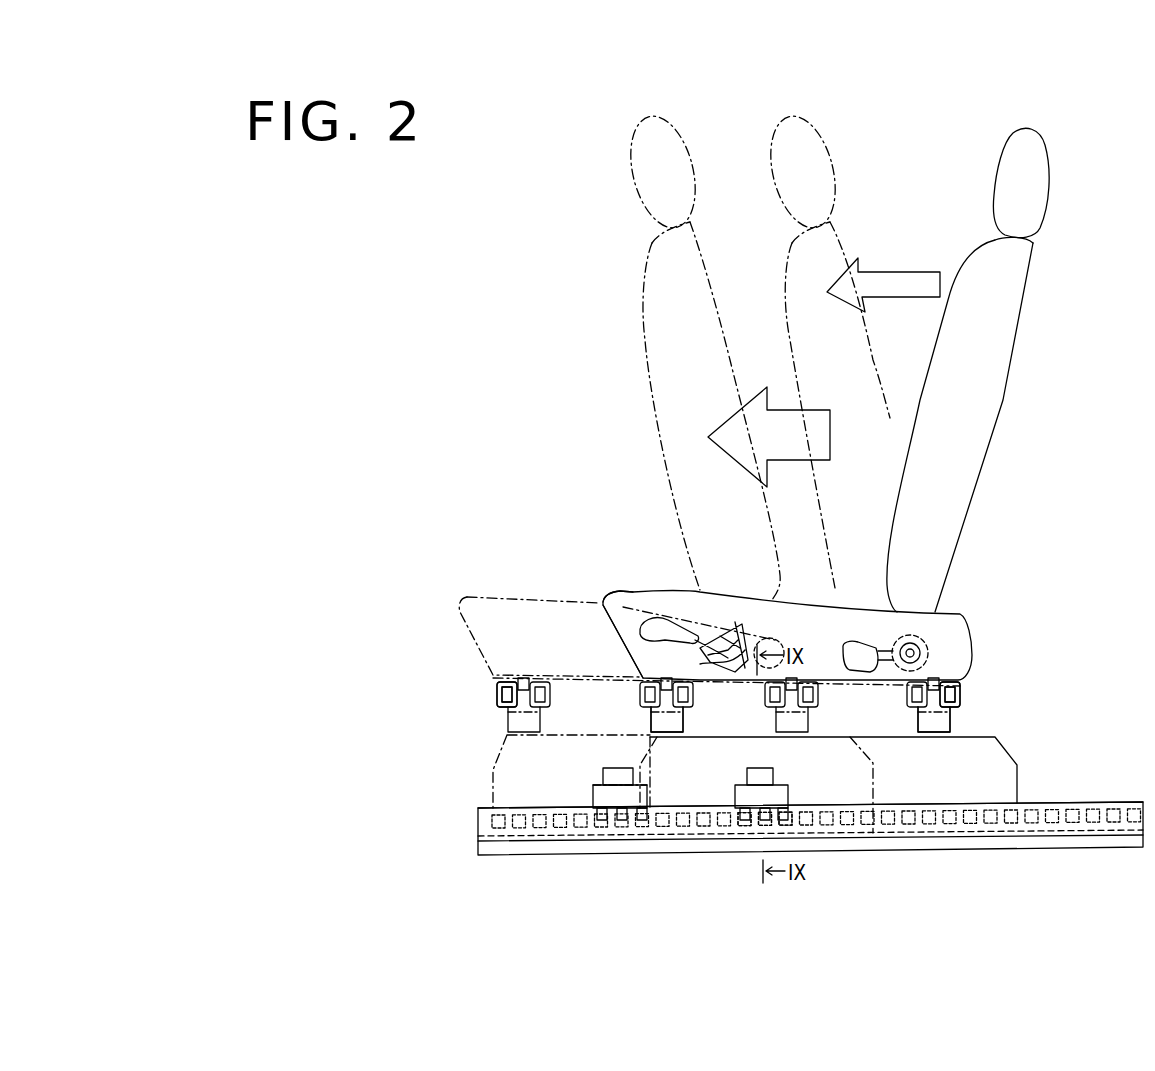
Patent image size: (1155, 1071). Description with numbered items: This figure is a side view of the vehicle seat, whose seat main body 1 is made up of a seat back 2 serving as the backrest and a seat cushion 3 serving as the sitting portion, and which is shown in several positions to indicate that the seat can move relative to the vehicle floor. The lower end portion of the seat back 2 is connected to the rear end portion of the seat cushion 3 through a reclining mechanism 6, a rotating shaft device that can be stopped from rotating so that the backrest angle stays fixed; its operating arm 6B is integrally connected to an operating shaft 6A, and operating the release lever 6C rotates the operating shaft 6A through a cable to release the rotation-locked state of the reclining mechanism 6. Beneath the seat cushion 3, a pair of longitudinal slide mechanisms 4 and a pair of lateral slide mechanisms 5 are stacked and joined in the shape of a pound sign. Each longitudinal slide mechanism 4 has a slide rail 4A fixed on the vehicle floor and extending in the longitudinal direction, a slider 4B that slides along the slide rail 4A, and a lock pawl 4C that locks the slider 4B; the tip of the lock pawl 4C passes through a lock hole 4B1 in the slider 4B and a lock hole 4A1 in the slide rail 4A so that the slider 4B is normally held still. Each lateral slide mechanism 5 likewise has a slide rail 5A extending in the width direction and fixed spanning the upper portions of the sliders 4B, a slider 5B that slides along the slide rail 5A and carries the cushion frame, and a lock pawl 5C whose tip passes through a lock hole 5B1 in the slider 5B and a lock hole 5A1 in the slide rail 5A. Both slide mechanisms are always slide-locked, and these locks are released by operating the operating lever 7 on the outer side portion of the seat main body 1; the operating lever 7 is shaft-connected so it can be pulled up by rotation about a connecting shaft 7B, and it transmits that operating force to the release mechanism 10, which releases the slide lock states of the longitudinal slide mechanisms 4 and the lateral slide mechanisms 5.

The seat main body 1 is at (1089, 201).
The seat back 2 is at (712, 303).
The seat cushion 3 is at (527, 597).
The longitudinal slide mechanism 4 is at (810, 812).
The slide rail 4A is at (1040, 803).
The lock hole 4A1 is at (1000, 752).
The slider 4B is at (1000, 752).
The lock hole 4B1 is at (770, 822).
The lock pawl 4C is at (737, 795).
The lateral slide mechanism 5 is at (807, 705).
The slide rail 5A is at (683, 718).
The lock hole 5A1 is at (800, 719).
The slider 5B is at (640, 690).
The lock hole 5B1 is at (728, 694).
The lock pawl 5C is at (728, 694).
The reclining mechanism 6 is at (971, 633).
The operating shaft 6A is at (978, 644).
The operating arm 6B is at (910, 653).
The release lever 6C is at (868, 640).
The operating lever 7 is at (643, 602).
The connecting shaft 7B is at (694, 612).
The release mechanism 10 is at (785, 612).